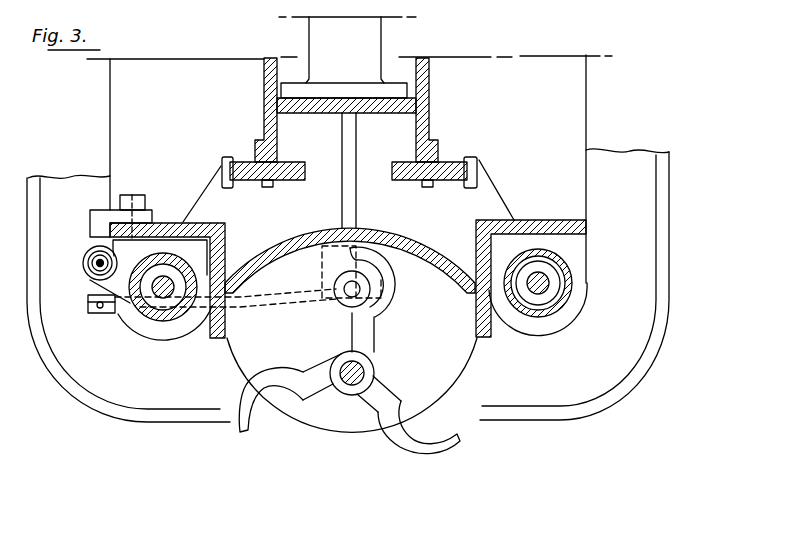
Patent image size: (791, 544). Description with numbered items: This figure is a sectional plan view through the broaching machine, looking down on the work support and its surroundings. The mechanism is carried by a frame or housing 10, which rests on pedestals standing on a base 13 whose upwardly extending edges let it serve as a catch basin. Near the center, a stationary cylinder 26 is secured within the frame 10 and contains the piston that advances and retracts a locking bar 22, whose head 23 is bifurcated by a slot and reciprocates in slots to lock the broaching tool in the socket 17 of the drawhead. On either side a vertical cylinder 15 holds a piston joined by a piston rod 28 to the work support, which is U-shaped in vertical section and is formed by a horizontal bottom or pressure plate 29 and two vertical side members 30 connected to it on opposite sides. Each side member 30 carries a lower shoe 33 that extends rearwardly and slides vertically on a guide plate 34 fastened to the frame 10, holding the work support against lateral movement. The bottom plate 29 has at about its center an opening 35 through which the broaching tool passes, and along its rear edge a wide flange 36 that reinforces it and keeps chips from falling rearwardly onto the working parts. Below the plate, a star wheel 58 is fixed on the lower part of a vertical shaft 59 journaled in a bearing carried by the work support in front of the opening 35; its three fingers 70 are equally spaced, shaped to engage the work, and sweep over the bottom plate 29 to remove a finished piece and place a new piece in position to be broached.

The frame or housing 10 is at (349, 169).
The base 13 is at (610, 363).
The vertical cylinder 15 is at (85, 257).
The socket 17 is at (370, 302).
The locking bar 22 is at (349, 131).
The head 23 is at (336, 258).
The cylinder 26 is at (347, 57).
The piston rod 28 is at (172, 297).
The bottom or pressure plate 29 is at (404, 494).
The vertical side member 30 is at (219, 229).
The lower shoe 33 is at (219, 163).
The guide plate 34 is at (247, 162).
The opening 35 is at (339, 302).
The wide flange 36 is at (382, 230).
The star wheel 58 is at (375, 372).
The vertical shaft 59 is at (350, 354).
The fingers 70 is at (388, 288).